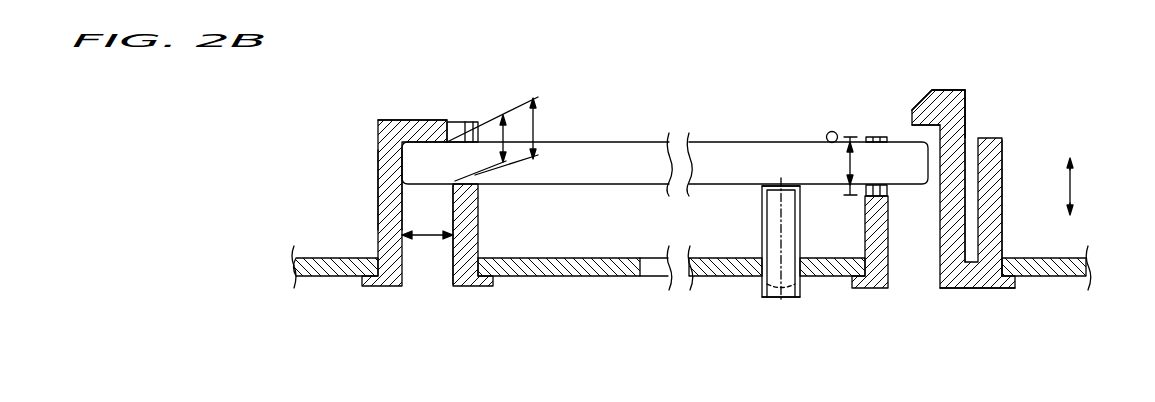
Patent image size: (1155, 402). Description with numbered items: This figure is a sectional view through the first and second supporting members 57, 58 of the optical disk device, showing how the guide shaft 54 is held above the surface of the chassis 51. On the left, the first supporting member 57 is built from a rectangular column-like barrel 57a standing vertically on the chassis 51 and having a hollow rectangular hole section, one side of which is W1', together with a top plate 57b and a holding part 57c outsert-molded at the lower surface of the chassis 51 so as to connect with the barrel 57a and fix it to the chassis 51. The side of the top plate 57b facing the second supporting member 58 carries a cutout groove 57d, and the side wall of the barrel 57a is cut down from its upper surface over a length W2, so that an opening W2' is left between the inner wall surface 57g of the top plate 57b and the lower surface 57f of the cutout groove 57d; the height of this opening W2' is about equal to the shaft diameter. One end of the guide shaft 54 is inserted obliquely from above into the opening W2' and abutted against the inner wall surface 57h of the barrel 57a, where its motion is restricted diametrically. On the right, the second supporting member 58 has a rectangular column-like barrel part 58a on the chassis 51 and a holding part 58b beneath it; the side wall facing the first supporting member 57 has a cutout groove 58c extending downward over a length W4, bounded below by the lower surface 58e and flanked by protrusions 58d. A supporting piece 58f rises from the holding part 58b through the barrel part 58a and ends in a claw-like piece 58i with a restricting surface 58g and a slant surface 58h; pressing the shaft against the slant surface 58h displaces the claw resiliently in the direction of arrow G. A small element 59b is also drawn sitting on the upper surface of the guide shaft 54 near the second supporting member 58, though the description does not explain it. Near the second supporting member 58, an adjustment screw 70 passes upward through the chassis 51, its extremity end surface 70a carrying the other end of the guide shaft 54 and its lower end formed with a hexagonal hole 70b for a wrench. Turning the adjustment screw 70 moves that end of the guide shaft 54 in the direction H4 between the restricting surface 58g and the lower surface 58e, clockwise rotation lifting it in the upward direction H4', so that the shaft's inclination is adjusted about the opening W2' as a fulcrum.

The chassis 51 is at (578, 256).
The guide shaft 54 is at (620, 140).
The first supporting member 57 is at (378, 167).
The rectangular column-like barrel 57a is at (378, 192).
The top plate 57b is at (452, 121).
The holding part 57c is at (470, 288).
The cutout groove 57d is at (460, 123).
The lower surface of the cutout groove 57f is at (470, 183).
The inner wall surface of the top plate 57g is at (414, 141).
The inner wall surface of the barrel 57h is at (410, 208).
The second supporting member 58 is at (1003, 150).
The rectangular column-like barrel part 58a is at (1003, 229).
The holding part 58b is at (975, 289).
The cutout groove 58c is at (874, 136).
The protrusions 58d is at (869, 133).
The lower surface of the cutout groove 58e is at (888, 198).
The supporting piece 58f is at (952, 182).
The restricting surface 58g is at (912, 117).
The slant surface 58h is at (932, 91).
The claw-like piece 58i is at (950, 106).
The projection 59b is at (827, 132).
The adjustment screw 70 is at (760, 290).
The extremity end surface 70a is at (772, 172).
The hexagonal hole 70b is at (790, 300).
The direction of arrow G is at (947, 80).
The side of the rectangular hole section W1' is at (427, 276).
The length of the cutout groove in the height direction W2 is at (536, 136).
The opening W2' is at (496, 119).
The length of the cutout groove in the height direction W4 is at (848, 163).
The direction of movement H4 is at (1088, 186).
The upward direction H4' is at (1102, 154).